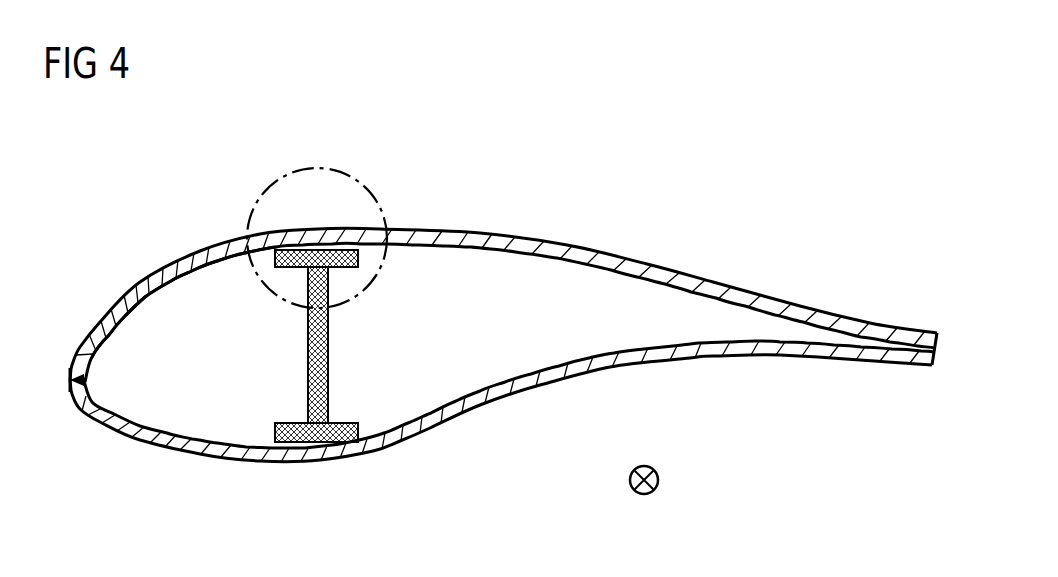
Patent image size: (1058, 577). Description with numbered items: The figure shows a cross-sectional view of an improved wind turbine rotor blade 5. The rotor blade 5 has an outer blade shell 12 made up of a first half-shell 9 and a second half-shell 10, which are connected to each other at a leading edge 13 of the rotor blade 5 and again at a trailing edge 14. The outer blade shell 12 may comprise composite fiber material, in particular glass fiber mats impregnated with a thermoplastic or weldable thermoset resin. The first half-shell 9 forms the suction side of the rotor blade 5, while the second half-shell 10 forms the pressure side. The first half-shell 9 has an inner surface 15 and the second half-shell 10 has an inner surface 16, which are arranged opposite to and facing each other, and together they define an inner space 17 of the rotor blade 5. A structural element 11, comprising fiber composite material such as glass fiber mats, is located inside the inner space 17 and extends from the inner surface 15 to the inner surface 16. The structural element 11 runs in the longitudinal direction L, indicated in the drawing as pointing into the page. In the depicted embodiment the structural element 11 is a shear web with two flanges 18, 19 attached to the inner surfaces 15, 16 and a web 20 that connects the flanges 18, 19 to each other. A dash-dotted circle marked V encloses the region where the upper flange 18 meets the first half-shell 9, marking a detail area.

The rotor blade 5 is at (745, 138).
The first half-shell 9 is at (603, 240).
The second half-shell 10 is at (540, 360).
The structural element 11 is at (290, 378).
The outer blade shell 12 is at (638, 172).
The leading edge 13 is at (68, 386).
The trailing edge 14 is at (934, 366).
The inner surface 15 is at (663, 287).
The inner surface 16 is at (632, 346).
The inner space 17 is at (208, 290).
The flange 18 is at (340, 266).
The flange 19 is at (340, 423).
The web 20 is at (308, 326).
The detail view marker V is at (290, 168).
The longitudinal direction L is at (659, 482).